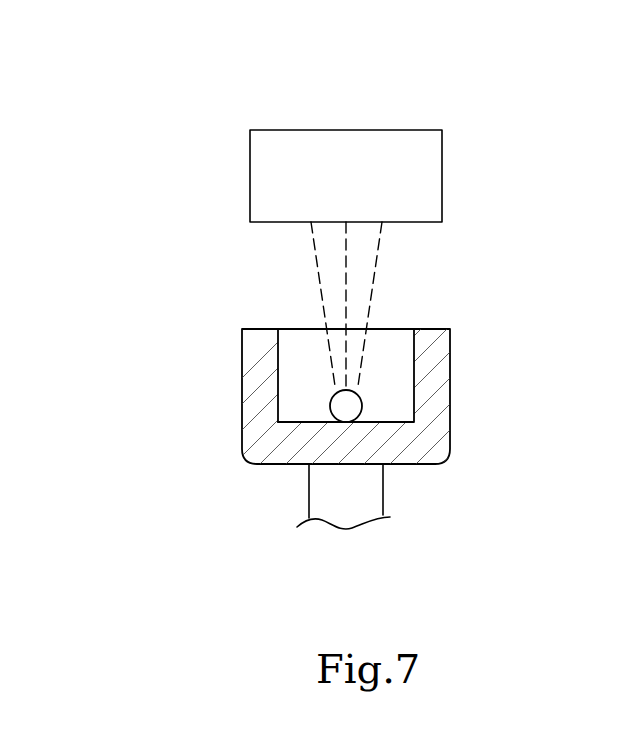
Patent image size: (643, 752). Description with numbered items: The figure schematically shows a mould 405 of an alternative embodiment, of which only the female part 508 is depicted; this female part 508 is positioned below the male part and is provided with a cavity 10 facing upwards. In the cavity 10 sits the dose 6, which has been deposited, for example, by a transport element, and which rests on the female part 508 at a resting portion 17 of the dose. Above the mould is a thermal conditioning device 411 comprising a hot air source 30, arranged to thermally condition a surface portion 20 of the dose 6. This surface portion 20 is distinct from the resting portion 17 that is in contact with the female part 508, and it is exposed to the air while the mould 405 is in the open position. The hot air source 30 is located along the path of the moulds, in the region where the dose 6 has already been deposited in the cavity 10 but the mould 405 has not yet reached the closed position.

The hot air source 30 is at (345, 150).
The thermal conditioning device 411 is at (224, 175).
The mould 405 is at (371, 401).
The female part 508 is at (450, 429).
The surface portion 20 is at (343, 390).
The cavity 10 is at (298, 422).
The dose 6 is at (363, 397).
The resting portion 17 is at (346, 422).